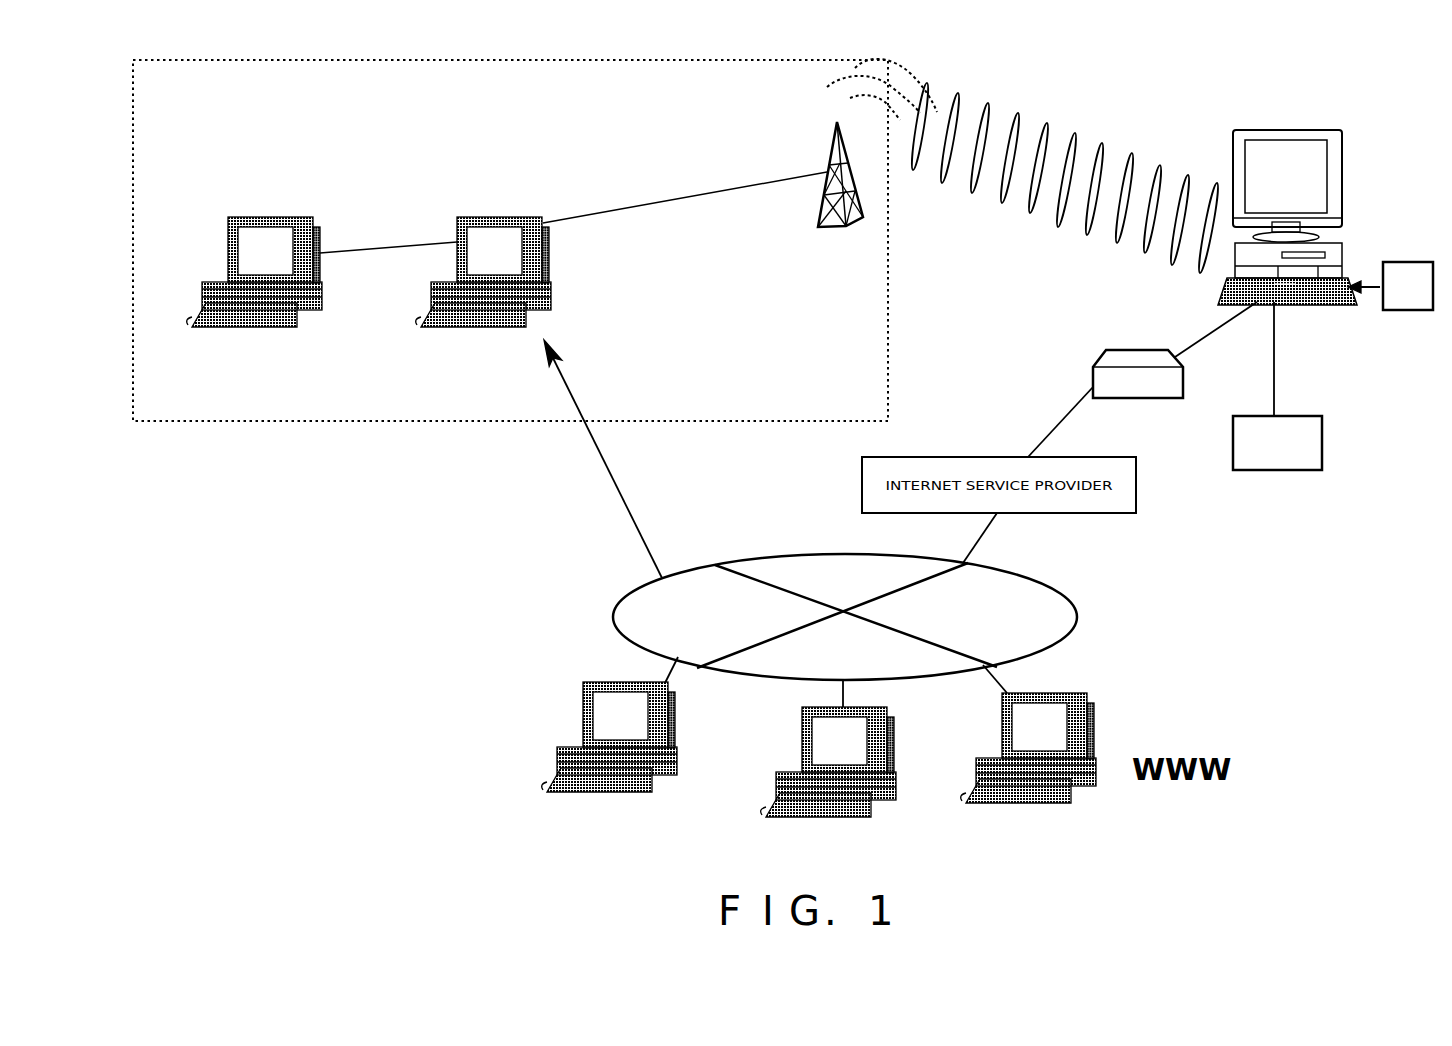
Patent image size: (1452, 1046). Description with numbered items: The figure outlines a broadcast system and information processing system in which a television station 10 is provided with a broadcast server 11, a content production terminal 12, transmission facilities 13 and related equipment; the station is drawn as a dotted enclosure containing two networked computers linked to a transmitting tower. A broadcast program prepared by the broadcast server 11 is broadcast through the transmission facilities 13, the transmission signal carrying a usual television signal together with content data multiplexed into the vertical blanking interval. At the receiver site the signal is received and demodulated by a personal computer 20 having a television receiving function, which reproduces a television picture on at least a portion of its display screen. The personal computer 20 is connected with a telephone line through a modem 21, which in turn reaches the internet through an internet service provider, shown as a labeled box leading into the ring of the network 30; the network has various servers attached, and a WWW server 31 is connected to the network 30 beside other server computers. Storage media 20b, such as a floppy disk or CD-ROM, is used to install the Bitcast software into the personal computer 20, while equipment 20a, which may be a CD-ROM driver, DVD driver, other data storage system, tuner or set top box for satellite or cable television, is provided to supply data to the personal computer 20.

The television station 10 is at (433, 115).
The broadcast server 11 is at (542, 280).
The computer 12 is at (278, 218).
The transmission facilities 13 is at (837, 232).
The personal computer 20 is at (1298, 130).
The equipment 20a is at (1273, 470).
The storage media 20b is at (1417, 262).
The modem 21 is at (1150, 400).
The network 30 is at (1078, 631).
The WWW server 31 is at (1090, 740).